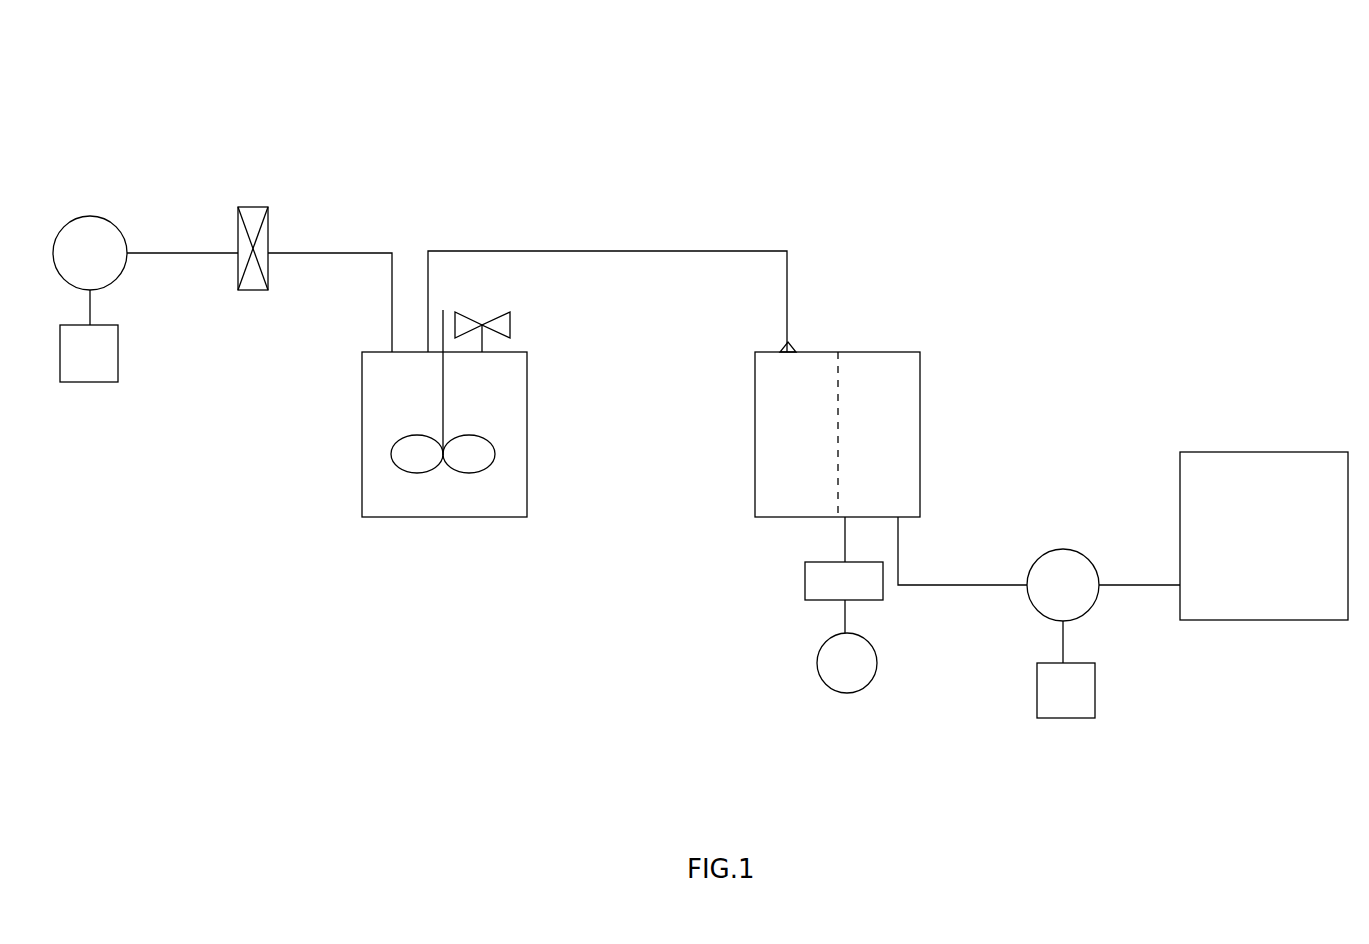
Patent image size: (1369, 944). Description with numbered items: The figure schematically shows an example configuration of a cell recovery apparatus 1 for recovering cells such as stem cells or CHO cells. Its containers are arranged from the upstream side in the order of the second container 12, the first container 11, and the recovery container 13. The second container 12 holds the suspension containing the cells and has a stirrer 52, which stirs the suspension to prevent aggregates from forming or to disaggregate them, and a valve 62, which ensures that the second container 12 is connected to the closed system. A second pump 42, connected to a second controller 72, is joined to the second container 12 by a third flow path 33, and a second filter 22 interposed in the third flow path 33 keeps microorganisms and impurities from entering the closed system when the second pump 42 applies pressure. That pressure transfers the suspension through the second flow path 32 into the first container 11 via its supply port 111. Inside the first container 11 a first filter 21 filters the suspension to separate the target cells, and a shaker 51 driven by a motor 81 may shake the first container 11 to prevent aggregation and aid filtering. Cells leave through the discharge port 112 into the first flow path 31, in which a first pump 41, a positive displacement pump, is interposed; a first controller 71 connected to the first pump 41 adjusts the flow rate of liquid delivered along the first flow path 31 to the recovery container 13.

The cell recovery apparatus 1 is at (757, 138).
The first container 11 is at (805, 518).
The supply port 111 is at (795, 348).
The discharge port 112 is at (910, 527).
The second container 12 is at (488, 518).
The recovery container 13 is at (1278, 621).
The first filter 21 is at (838, 432).
The second filter 22 is at (250, 291).
The first flow path 31 is at (1128, 584).
The second flow path 32 is at (583, 250).
The third flow path 33 is at (175, 252).
The first pump 41 is at (1053, 550).
The second pump 42 is at (76, 219).
The shaker 51 is at (820, 600).
The stirrer 52 is at (395, 467).
The valve 62 is at (518, 320).
The first controller 71 is at (1055, 719).
The second controller 72 is at (72, 384).
The motor 81 is at (875, 680).